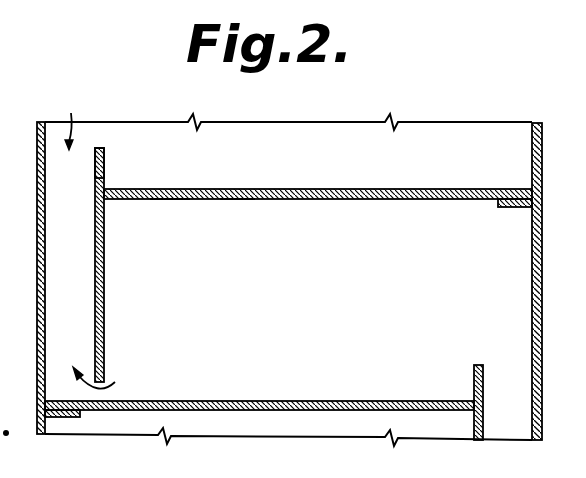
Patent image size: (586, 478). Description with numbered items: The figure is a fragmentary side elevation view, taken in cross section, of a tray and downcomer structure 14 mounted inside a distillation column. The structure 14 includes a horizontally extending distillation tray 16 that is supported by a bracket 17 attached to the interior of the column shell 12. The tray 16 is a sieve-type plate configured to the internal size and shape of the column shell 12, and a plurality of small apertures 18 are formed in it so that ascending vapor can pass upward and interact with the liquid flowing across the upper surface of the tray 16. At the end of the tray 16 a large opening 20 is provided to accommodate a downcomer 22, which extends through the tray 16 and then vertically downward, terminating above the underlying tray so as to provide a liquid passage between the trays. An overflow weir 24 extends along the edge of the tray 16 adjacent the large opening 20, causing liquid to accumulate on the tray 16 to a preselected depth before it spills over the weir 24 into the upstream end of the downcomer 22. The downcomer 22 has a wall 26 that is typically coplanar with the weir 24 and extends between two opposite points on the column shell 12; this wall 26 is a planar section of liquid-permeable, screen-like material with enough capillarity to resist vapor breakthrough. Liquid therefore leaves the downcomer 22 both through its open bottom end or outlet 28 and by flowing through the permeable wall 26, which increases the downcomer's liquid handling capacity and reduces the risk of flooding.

The column shell 12 is at (37, 226).
The tray and downcomer structure 14 is at (124, 182).
The distillation tray 16 is at (352, 190).
The bracket 17 is at (515, 207).
The apertures 18 is at (170, 199).
The large opening 20 is at (72, 121).
The downcomer 22 is at (104, 329).
The overflow weir 24 is at (104, 166).
The downcomer wall 26 is at (104, 291).
The outlet 28 is at (107, 379).